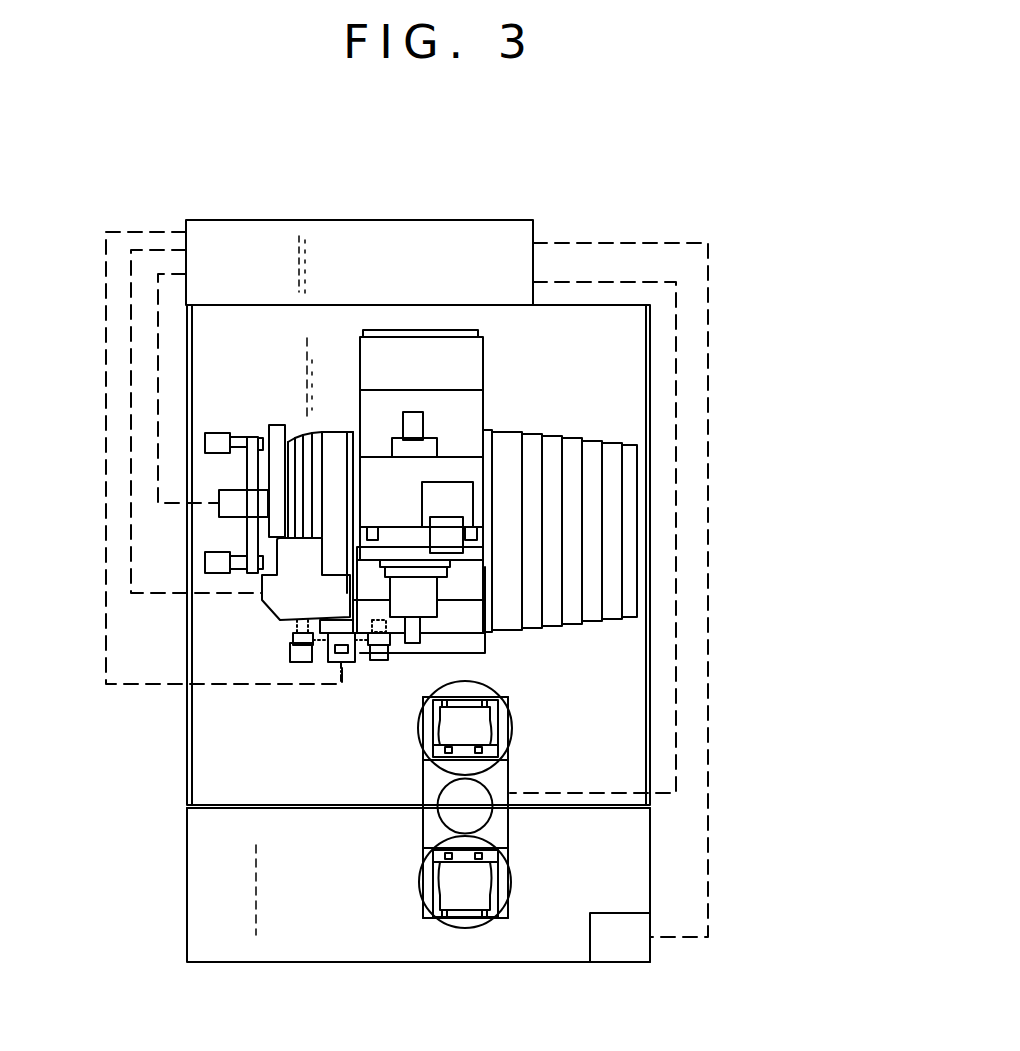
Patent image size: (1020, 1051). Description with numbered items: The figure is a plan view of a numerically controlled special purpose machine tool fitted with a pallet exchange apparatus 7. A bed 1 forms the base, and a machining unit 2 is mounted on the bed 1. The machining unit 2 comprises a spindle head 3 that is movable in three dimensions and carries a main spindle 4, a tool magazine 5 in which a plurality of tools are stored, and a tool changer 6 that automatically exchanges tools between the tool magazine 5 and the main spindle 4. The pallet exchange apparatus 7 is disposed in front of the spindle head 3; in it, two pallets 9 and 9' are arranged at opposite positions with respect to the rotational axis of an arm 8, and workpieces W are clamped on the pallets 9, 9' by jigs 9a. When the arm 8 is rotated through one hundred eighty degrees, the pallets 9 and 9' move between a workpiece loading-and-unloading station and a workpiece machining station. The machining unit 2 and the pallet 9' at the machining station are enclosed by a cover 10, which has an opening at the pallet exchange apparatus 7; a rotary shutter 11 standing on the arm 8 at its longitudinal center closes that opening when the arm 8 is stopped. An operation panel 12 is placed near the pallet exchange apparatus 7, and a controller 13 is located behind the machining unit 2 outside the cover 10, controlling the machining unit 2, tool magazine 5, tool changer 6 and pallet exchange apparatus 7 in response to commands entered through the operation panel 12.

The bed 1 is at (628, 843).
The machining unit 2 is at (517, 405).
The spindle head 3 is at (423, 593).
The main spindle 4 is at (422, 637).
The tool magazine 5 is at (217, 477).
The tool changer 6 is at (290, 657).
The pallet exchange apparatus 7 is at (538, 758).
The arm 8 is at (433, 827).
The pallet 9 is at (484, 943).
The pallet 9' is at (307, 779).
The jig 9a is at (428, 757).
The cover 10 is at (648, 417).
The rotary shutter 11 is at (508, 810).
The operation panel 12 is at (623, 952).
The controller 13 is at (403, 237).
The workpiece W is at (460, 720).